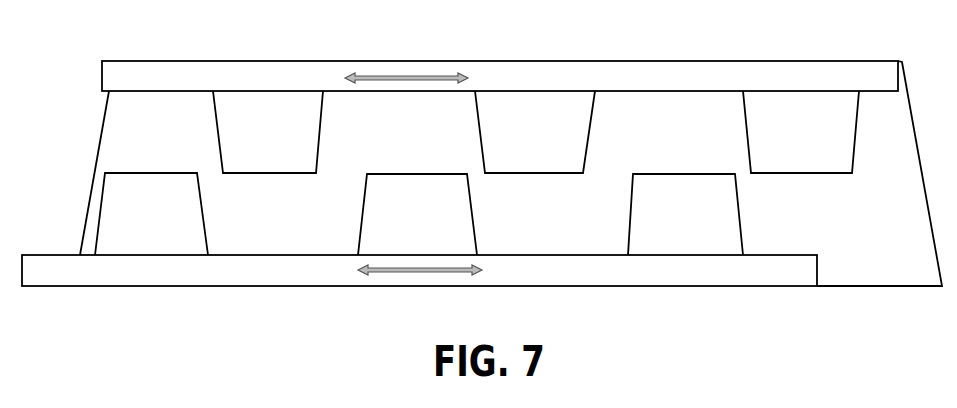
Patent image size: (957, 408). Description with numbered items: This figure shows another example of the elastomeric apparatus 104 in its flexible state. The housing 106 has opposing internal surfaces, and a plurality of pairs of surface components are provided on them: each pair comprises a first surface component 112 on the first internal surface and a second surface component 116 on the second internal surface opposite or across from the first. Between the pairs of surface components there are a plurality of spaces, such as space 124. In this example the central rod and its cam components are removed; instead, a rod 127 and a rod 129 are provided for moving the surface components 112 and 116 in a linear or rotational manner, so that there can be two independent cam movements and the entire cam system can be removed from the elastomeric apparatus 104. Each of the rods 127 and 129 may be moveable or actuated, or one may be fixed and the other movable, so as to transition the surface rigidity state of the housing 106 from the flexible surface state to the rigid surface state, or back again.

The elastomeric apparatus 104 is at (188, 36).
The housing 106 is at (97, 165).
The first surface component 112 is at (174, 168).
The second surface component 116 is at (261, 180).
The space 124 is at (286, 312).
The rod 127 is at (386, 97).
The rod 129 is at (287, 251).